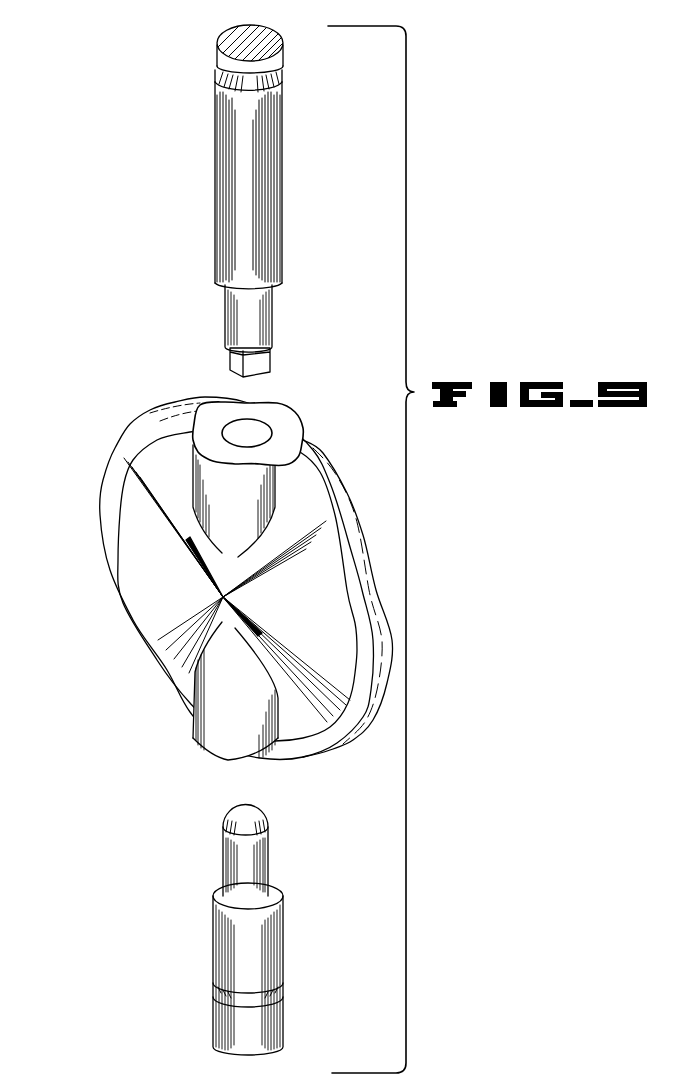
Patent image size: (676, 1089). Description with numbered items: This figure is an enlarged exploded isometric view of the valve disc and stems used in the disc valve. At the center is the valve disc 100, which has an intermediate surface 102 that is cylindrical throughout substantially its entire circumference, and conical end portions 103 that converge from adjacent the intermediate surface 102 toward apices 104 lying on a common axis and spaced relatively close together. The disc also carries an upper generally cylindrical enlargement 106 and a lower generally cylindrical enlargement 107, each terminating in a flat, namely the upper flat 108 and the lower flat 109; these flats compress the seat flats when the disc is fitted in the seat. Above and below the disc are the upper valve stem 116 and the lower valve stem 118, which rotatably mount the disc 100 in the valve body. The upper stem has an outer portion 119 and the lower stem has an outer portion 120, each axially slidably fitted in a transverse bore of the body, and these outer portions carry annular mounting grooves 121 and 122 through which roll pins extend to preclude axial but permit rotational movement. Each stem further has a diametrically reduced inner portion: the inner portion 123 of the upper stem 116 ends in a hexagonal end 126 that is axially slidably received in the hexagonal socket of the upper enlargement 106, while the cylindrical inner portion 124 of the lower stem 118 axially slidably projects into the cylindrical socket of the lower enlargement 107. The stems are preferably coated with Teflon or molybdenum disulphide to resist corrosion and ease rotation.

The valve disc 100 is at (207, 575).
The intermediate surface 102 is at (218, 578).
The conical end portions 103 is at (130, 545).
The apices 104 is at (220, 598).
The upper cylindrical enlargement 106 is at (250, 518).
The lower cylindrical enlargement 107 is at (252, 703).
The flat 108 is at (276, 410).
The flat 109 is at (205, 757).
The upper valve stem 116 is at (223, 198).
The lower valve stem 118 is at (241, 930).
The outer portion 119 is at (222, 135).
The outer portion 120 is at (218, 922).
The annular mounting groove 121 is at (215, 70).
The annular mounting groove 122 is at (218, 986).
The inner portion 123 is at (232, 308).
The inner portion 124 is at (228, 856).
The hexagonal end 126 is at (232, 358).